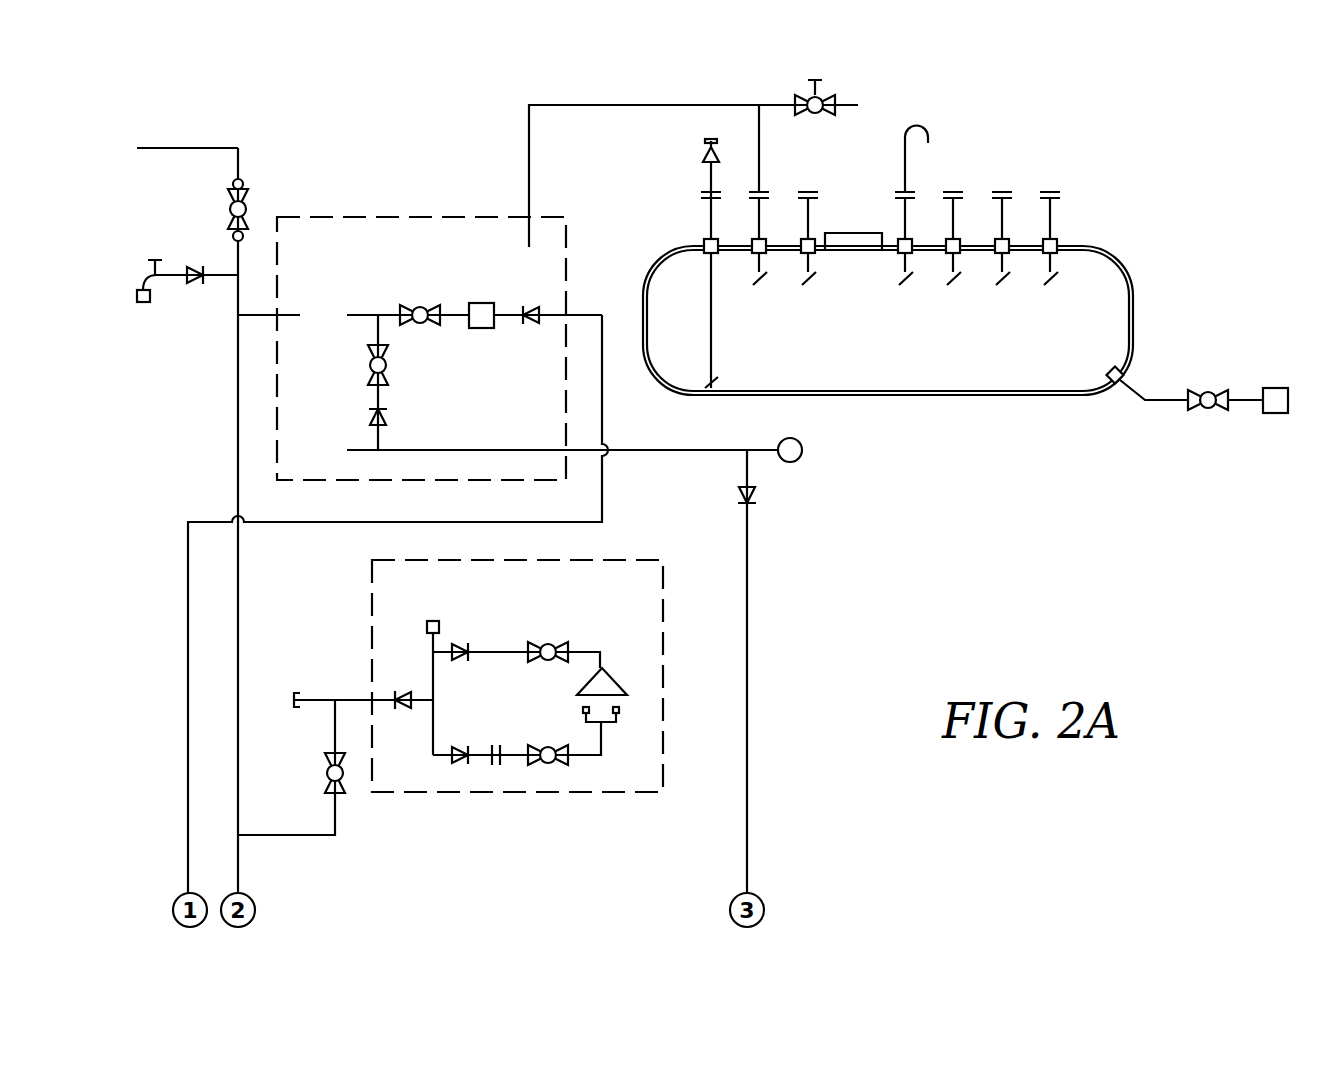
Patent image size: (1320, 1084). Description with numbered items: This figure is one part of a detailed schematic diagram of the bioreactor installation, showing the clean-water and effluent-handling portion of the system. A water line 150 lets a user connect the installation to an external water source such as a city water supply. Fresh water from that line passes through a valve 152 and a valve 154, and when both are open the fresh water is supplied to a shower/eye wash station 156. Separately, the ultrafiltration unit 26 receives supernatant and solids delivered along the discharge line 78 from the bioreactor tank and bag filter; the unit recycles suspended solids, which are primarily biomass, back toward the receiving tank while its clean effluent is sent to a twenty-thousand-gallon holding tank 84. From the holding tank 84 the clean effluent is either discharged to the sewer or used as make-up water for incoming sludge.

The ultrafiltration unit 26 is at (338, 216).
The discharge line 78 is at (529, 140).
The holding tank 84 is at (1018, 397).
The water line 150 is at (176, 148).
The valve 152 is at (232, 209).
The valve 154 is at (325, 773).
The shower/eye wash station 156 is at (372, 594).